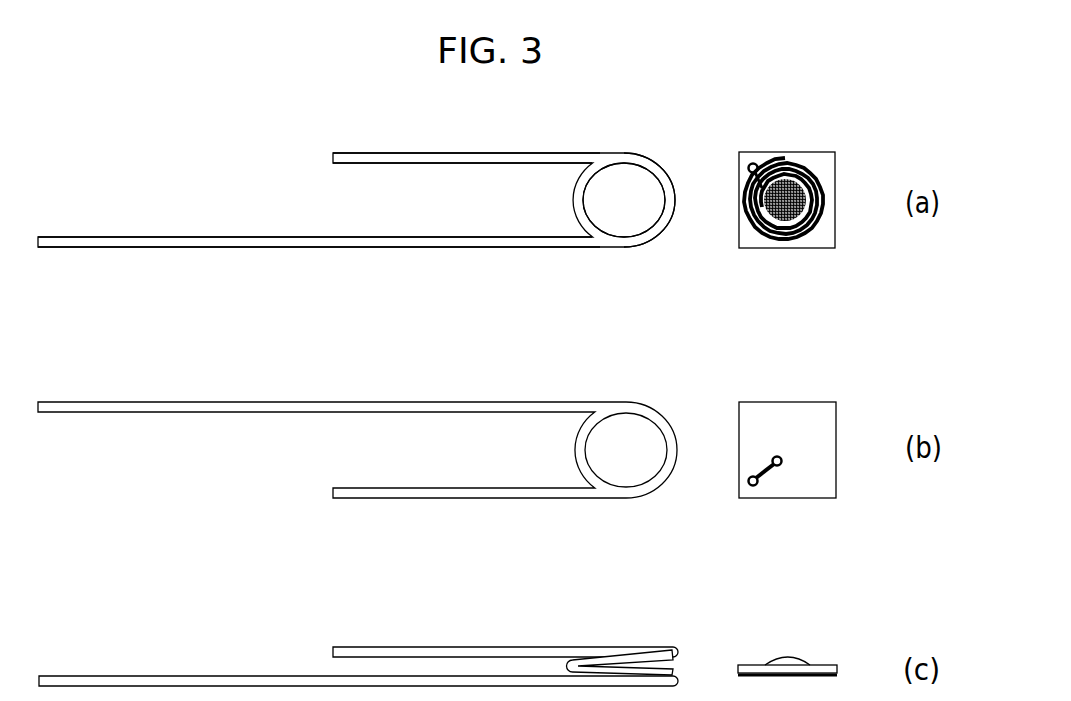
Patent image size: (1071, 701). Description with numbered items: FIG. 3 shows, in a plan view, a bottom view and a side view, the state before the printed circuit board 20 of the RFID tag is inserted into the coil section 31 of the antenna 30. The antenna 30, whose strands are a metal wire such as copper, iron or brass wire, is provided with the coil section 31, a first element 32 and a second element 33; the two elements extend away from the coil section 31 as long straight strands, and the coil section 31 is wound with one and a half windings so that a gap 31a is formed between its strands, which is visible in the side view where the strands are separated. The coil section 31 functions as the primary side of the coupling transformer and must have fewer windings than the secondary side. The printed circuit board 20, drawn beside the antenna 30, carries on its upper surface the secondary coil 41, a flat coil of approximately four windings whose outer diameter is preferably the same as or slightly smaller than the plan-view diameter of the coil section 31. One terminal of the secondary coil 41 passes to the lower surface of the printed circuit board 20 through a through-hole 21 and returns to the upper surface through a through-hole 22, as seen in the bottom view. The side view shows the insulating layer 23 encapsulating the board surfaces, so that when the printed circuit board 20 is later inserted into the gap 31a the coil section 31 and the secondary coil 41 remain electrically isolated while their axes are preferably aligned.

The antenna 30 is at (125, 222).
The coil section 31 is at (576, 198).
The first element 32 is at (340, 243).
The second element 33 is at (450, 155).
The secondary coil 41 is at (822, 132).
The printed circuit board 20 is at (828, 238).
The through-hole 21 is at (751, 476).
The through-hole 22 is at (778, 456).
The gap 31a is at (712, 622).
The insulating layer 23 is at (852, 643).